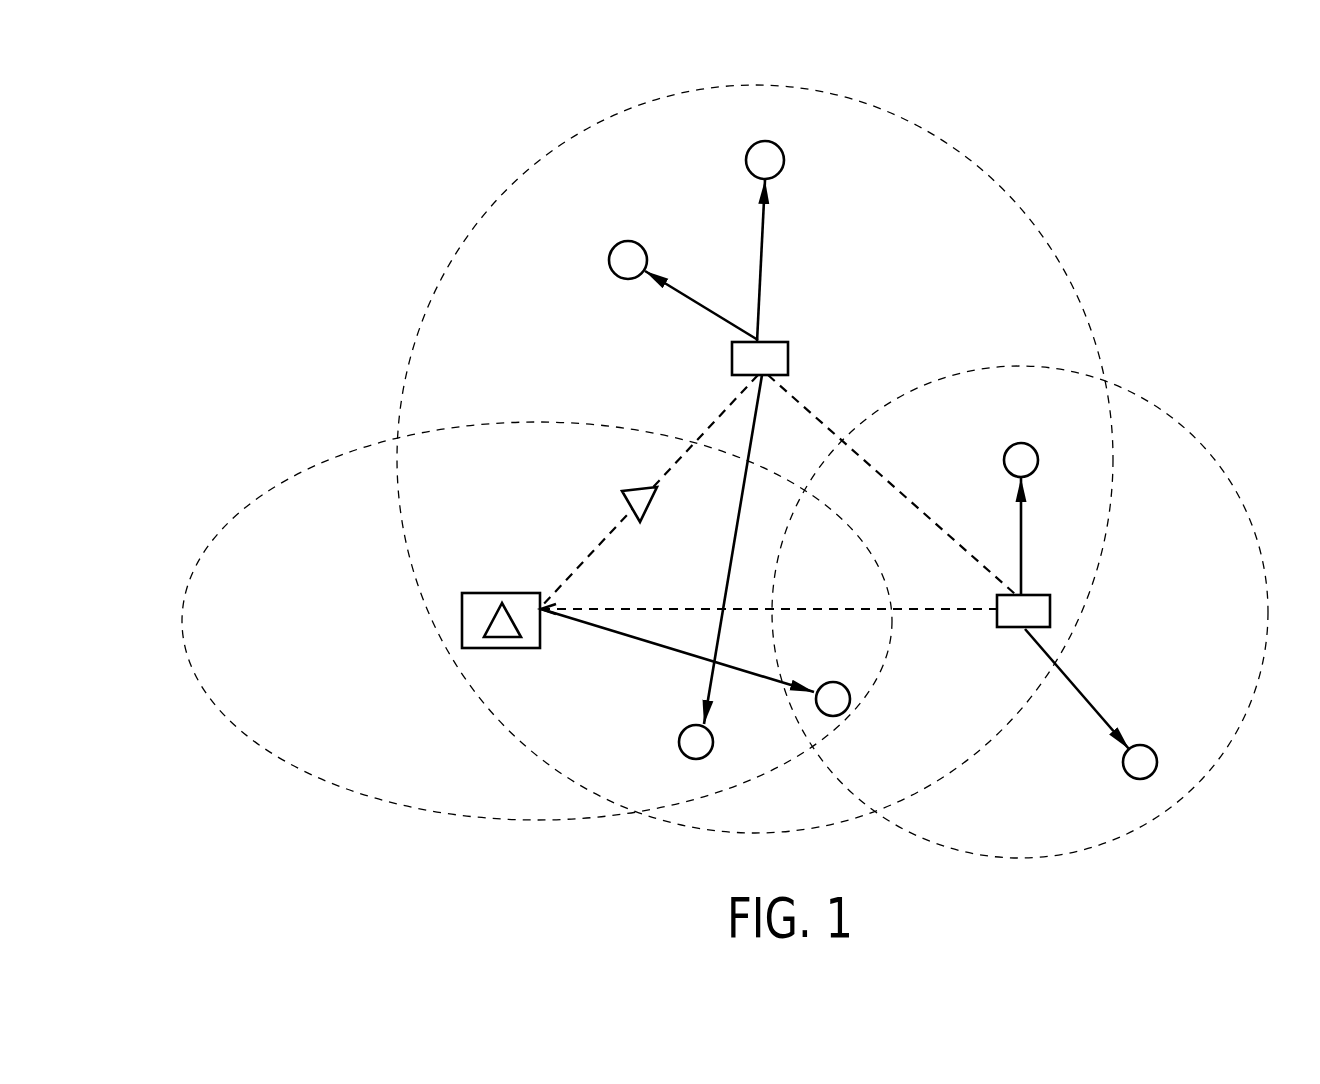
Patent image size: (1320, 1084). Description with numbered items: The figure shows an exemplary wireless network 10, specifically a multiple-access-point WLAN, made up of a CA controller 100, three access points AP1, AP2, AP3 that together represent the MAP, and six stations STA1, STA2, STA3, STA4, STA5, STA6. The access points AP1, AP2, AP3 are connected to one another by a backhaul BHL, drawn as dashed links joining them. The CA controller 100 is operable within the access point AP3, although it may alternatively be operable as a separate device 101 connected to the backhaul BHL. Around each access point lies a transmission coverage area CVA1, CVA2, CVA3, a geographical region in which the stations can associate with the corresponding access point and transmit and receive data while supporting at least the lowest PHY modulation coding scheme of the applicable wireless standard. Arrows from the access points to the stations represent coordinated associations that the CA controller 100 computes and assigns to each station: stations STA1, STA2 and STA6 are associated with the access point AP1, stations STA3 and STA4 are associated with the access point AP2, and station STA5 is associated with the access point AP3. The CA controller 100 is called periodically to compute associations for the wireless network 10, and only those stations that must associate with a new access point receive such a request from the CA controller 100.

The wireless network 10 is at (260, 120).
The CA controller 100 is at (502, 651).
The separate device 101 is at (625, 507).
The access point AP1 is at (777, 342).
The access point AP2 is at (1051, 611).
The access point AP3 is at (484, 630).
The station STA1 is at (628, 254).
The station STA2 is at (767, 157).
The station STA3 is at (1025, 466).
The station STA4 is at (1135, 760).
The station STA5 is at (833, 690).
The station STA6 is at (687, 742).
The transmission coverage area CVA1 is at (927, 131).
The transmission coverage area CVA2 is at (1170, 416).
The transmission coverage area CVA3 is at (334, 461).
The backhaul BHL is at (862, 461).